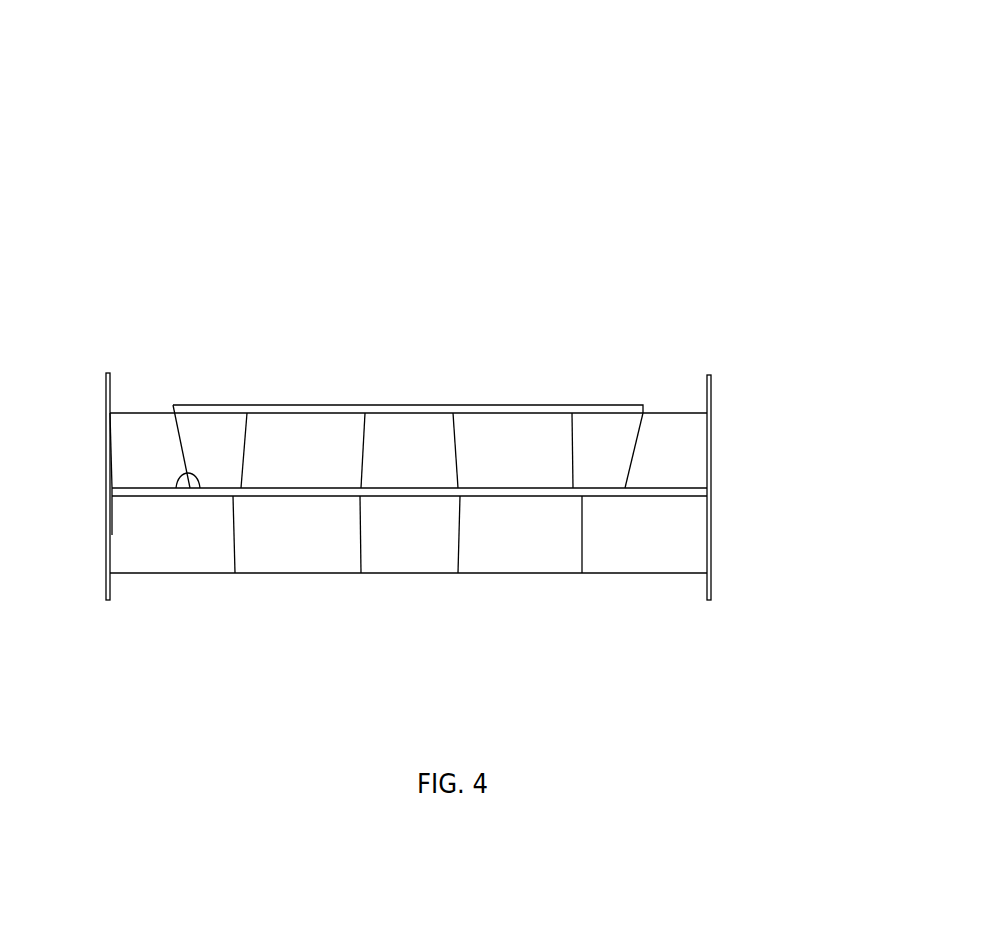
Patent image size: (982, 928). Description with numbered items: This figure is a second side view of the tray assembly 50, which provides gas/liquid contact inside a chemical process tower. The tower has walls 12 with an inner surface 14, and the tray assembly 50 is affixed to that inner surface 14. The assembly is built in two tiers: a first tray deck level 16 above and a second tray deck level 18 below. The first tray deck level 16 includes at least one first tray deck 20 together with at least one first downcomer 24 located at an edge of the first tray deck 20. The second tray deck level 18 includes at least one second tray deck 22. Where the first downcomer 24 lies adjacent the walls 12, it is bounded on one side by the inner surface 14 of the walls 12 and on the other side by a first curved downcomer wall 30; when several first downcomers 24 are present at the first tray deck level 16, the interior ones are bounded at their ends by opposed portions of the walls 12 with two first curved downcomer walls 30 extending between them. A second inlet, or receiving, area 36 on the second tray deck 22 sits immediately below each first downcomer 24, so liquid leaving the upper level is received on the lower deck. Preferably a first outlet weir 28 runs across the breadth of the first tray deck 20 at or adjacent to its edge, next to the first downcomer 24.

The tray assembly 50 is at (186, 134).
The walls 12 is at (110, 373).
The inner surface 14 is at (112, 452).
The first tray deck level 16 is at (825, 410).
The second tray deck level 18 is at (857, 502).
The first tray deck 20 is at (432, 408).
The second tray deck 22 is at (190, 470).
The first downcomer 24 is at (104, 420).
The first outlet weir 28 is at (587, 407).
The first curved downcomer wall 30 is at (618, 455).
The second inlet (receiving) area 36 is at (144, 484).